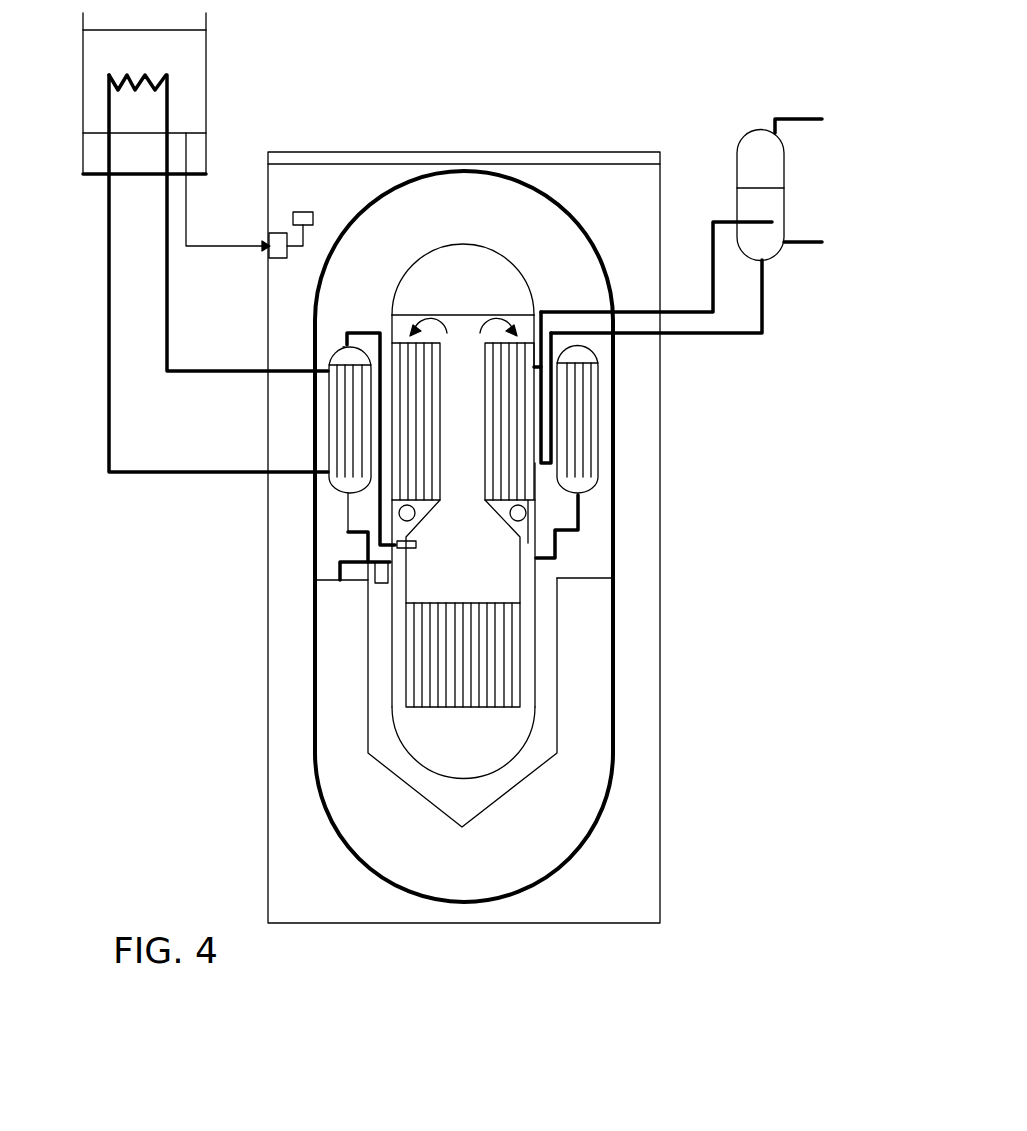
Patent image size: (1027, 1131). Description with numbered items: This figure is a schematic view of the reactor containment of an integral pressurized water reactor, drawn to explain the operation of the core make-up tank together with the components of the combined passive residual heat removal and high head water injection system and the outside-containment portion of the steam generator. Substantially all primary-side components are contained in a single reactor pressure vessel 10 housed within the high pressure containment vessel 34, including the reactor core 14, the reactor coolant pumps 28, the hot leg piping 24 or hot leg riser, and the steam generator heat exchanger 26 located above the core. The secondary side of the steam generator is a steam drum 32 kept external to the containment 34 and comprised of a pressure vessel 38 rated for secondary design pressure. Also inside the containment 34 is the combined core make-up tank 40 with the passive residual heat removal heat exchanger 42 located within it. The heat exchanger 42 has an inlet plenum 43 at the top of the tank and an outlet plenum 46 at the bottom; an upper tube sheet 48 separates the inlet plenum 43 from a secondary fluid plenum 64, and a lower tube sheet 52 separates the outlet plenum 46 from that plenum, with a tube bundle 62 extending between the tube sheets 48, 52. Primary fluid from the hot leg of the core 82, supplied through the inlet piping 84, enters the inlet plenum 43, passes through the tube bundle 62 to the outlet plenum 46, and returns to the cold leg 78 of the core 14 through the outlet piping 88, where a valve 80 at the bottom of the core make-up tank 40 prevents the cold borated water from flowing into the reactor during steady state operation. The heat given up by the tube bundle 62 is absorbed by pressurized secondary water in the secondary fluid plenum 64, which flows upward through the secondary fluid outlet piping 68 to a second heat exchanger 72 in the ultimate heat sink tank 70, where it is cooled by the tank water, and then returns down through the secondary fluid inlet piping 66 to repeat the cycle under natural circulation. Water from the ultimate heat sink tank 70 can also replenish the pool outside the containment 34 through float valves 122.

The reactor pressure vessel 10 is at (533, 707).
The reactor core 14 is at (512, 662).
The hot leg piping 24 is at (448, 445).
The heat exchanger 26 is at (403, 363).
The reactor coolant pumps 28 is at (537, 508).
The steam drum 32 is at (681, 199).
The containment vessel 34 is at (612, 518).
The pressure vessel 38 is at (737, 181).
The core make-up tank 40 is at (463, 424).
The passive residual heat removal heat exchanger 42 is at (600, 448).
The inlet plenum 43 is at (343, 347).
The outlet plenum 46 is at (348, 526).
The upper tube sheet 48 is at (330, 382).
The lower tube sheet 52 is at (336, 482).
The tube bundle 62 is at (329, 438).
The secondary fluid plenum 64 is at (293, 439).
The secondary fluid inlet piping 66 is at (178, 473).
The secondary fluid outlet piping 68 is at (202, 372).
The ultimate heat sink tank 70 is at (190, 82).
The second heat exchanger 72 is at (150, 76).
The cold leg 78 is at (397, 630).
The valve 80 is at (338, 558).
The hot leg of the core 82 is at (416, 545).
The inlet piping 84 is at (347, 348).
The outlet piping 88 is at (322, 561).
The float valves 122 is at (305, 212).